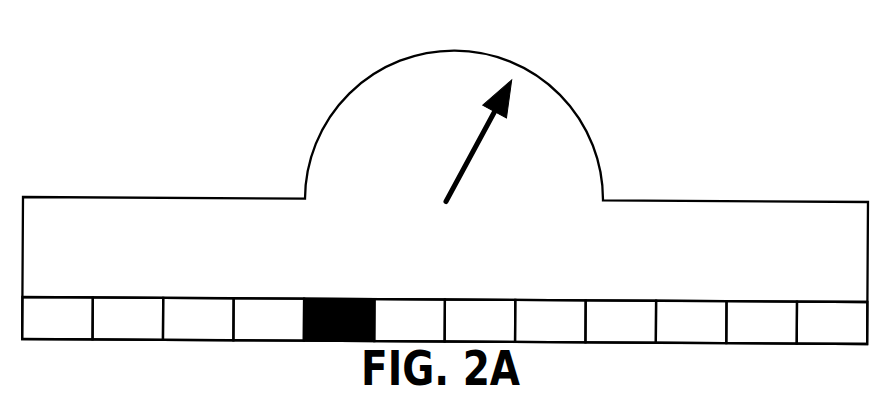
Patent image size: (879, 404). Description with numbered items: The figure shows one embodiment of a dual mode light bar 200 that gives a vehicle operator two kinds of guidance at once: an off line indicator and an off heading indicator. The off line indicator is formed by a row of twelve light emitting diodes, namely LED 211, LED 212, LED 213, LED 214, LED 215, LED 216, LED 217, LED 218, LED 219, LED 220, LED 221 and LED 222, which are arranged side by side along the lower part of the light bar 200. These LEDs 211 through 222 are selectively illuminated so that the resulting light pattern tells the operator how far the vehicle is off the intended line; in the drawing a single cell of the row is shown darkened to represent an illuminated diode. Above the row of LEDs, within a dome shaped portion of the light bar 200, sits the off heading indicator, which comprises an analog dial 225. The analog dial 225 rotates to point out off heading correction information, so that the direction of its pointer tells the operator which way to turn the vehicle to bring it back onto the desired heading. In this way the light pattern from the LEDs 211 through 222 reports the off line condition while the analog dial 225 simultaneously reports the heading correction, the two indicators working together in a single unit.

The dual mode light bar 200 is at (423, 22).
The light emitting diode 211 is at (57, 303).
The light emitting diode 212 is at (128, 303).
The light emitting diode 213 is at (198, 304).
The light emitting diode 214 is at (268, 304).
The light emitting diode 215 is at (339, 305).
The light emitting diode 216 is at (409, 305).
The light emitting diode 217 is at (480, 306).
The light emitting diode 218 is at (550, 306).
The light emitting diode 219 is at (620, 306).
The light emitting diode 220 is at (691, 307).
The light emitting diode 221 is at (761, 307).
The light emitting diode 222 is at (832, 308).
The analog dial 225 is at (469, 140).